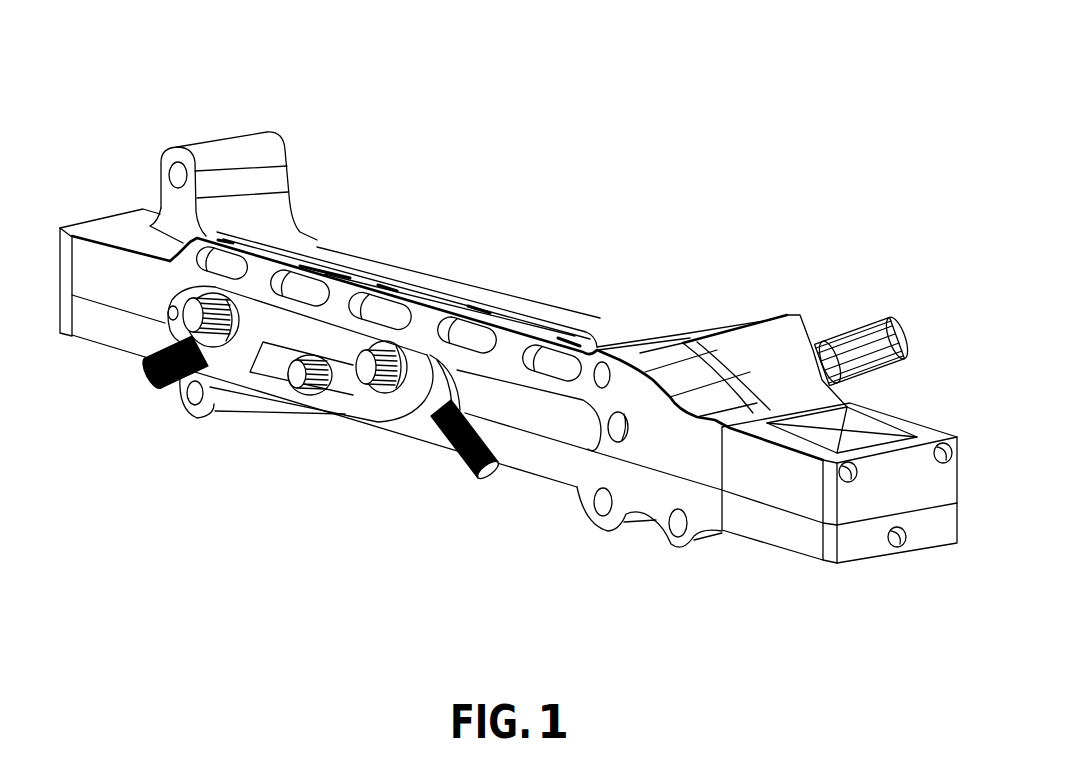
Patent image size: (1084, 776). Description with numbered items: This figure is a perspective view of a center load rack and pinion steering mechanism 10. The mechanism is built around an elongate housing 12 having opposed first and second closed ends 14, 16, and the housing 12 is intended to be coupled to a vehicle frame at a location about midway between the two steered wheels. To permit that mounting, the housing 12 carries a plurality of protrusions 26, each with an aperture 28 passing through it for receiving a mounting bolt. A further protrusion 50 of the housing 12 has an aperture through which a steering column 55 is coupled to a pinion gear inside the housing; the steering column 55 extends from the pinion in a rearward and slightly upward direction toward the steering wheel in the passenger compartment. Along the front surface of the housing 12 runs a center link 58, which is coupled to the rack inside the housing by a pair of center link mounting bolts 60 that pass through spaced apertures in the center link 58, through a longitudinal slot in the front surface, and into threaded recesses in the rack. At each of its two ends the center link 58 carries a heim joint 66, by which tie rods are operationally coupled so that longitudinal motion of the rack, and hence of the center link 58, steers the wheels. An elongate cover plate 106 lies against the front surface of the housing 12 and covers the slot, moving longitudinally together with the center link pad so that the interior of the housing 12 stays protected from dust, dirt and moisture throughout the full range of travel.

The center load rack and pinion steering mechanism 10 is at (613, 98).
The elongate housing 12 is at (698, 478).
The first closed end 14 is at (866, 549).
The second closed end 16 is at (65, 320).
The protrusions 26 is at (230, 148).
The apertures 28 is at (177, 176).
The protrusion 50 is at (770, 333).
The steering column 55 is at (868, 346).
The center link 58 is at (310, 382).
The center link mounting bolts 60 is at (290, 380).
The heim joints 66 is at (270, 274).
The cover plate 106 is at (528, 440).